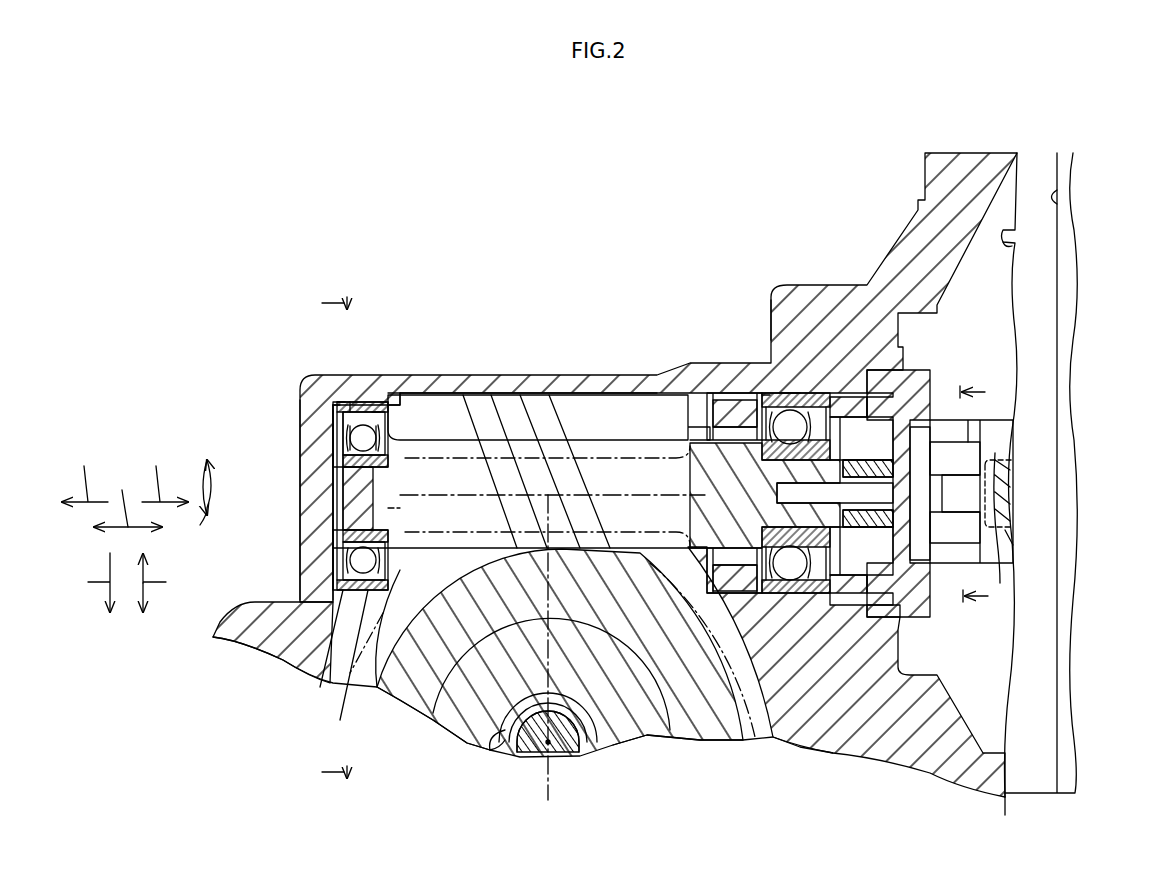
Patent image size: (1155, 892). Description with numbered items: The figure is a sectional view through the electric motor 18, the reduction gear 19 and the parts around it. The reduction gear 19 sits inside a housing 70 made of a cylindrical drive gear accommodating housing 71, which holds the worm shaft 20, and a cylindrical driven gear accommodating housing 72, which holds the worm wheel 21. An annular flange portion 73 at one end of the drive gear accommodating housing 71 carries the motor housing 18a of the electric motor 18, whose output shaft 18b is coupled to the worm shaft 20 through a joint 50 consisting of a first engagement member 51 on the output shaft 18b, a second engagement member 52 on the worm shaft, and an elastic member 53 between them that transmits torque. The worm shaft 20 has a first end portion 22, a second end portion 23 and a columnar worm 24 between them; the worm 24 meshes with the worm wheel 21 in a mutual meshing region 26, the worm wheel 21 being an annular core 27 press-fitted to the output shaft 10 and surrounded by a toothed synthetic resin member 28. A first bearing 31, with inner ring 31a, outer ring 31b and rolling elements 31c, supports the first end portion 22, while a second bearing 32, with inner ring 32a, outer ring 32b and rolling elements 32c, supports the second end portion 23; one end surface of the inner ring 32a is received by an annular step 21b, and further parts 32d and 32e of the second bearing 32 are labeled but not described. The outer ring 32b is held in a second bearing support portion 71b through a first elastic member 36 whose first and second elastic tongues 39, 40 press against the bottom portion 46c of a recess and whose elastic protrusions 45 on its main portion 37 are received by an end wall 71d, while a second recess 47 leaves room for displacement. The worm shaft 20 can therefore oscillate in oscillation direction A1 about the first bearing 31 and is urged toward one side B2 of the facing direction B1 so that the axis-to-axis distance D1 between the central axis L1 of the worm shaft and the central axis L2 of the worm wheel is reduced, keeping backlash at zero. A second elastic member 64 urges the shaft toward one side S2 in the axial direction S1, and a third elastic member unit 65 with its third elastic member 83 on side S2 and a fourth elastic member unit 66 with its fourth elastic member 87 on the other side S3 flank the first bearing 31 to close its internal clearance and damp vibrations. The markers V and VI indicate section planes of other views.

The housing 70 is at (958, 153).
The electric motor 18 is at (1063, 153).
The motor housing 18a is at (1060, 197).
The annular flange portion 73 is at (1008, 238).
The first bearing 31 is at (810, 390).
The fourth elastic member unit 66 is at (862, 392).
The outer ring 31b is at (790, 392).
The first end portion 22 is at (840, 396).
The third elastic member unit 65 is at (718, 394).
The rolling elements 31c is at (768, 298).
The inner ring 31a is at (729, 392).
The drive gear accommodating housing 71 is at (658, 381).
The second engagement member 52 is at (958, 420).
The mutual meshing region 26 is at (507, 553).
The first engagement member 51 is at (982, 447).
The elastic member 53 is at (975, 466).
The output shaft 18b is at (1010, 538).
The joint 50 is at (990, 566).
The reduction gear 19 is at (514, 430).
The worm shaft 20 is at (566, 440).
The worm 24 is at (590, 445).
The bearing lip 32e is at (352, 400).
The bottom portion 46c is at (402, 404).
The first elastic tongue 39 is at (338, 400).
The second elastic tongue 40 is at (380, 403).
The second bearing 32 is at (385, 438).
The first elastic member 36 is at (331, 407).
The outer ring 32b is at (334, 411).
The rolling elements 32c is at (346, 437).
The inner ring 32a is at (344, 458).
The end wall 71d is at (312, 489).
The second end portion 23 is at (353, 521).
The retainer 32d is at (373, 462).
The annular step 21b is at (392, 527).
The driven gear accommodating housing 72 is at (272, 603).
The elastic protrusion 45 is at (333, 573).
The main portion 37 is at (333, 600).
The second bearing support portion 71b is at (362, 595).
The second recess 47 is at (395, 583).
The synthetic resin member 28 is at (407, 692).
The annular core 27 is at (443, 718).
The output shaft 10 is at (488, 748).
The third elastic member 83 is at (757, 586).
The second elastic member 64 is at (857, 545).
The fourth elastic member 87 is at (876, 605).
The worm wheel 21 is at (706, 748).
The central axis L1 is at (610, 494).
The central axis L2 is at (540, 654).
The axis-to-axis distance D1 is at (551, 744).
The axial direction S1 is at (128, 497).
The one side S2 is at (85, 473).
The other side S3 is at (164, 473).
The oscillation direction A1 is at (194, 504).
The facing direction B1 is at (170, 583).
The one side B2 is at (85, 582).
The section line V is at (323, 537).
The section line VI is at (980, 496).